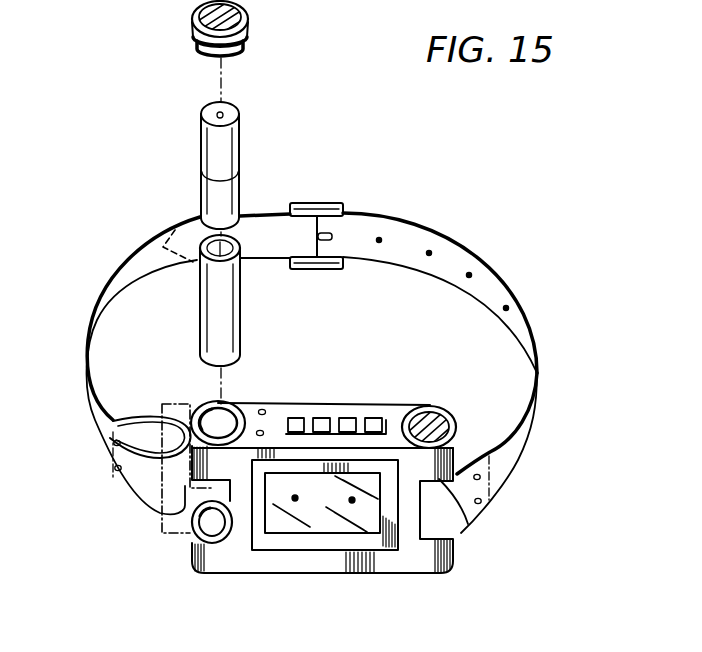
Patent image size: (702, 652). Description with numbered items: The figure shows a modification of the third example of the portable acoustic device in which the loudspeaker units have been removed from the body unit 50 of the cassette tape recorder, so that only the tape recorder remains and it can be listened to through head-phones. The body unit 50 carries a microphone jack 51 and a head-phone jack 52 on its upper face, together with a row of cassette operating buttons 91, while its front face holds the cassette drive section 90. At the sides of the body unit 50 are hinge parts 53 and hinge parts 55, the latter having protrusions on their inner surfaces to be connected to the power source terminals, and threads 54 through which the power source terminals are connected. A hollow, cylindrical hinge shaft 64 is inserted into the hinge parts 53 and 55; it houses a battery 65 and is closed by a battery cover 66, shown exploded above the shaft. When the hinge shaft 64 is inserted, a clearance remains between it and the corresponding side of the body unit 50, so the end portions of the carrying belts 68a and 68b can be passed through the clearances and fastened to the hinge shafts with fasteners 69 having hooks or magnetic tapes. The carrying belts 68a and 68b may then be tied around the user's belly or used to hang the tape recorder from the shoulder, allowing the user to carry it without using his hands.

The body unit 50 is at (282, 562).
The microphone jack 51 is at (265, 428).
The head-phone jack 52 is at (264, 406).
The hinge parts 53 is at (192, 468).
The threads 54 is at (232, 404).
The hinge parts 55 is at (207, 556).
The hollow, cylindrical hinge shafts 64 is at (198, 327).
The batteries 65 is at (200, 160).
The battery covers 66 is at (250, 22).
The carrying belt 68a is at (93, 439).
The carrying belt 68b is at (524, 438).
The fasteners 69 is at (115, 468).
The cassette drive section 90 is at (337, 533).
The cassette operating buttons 91 is at (352, 417).